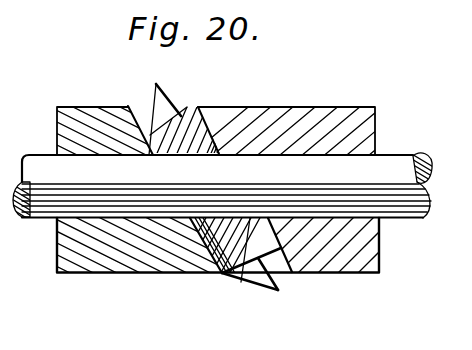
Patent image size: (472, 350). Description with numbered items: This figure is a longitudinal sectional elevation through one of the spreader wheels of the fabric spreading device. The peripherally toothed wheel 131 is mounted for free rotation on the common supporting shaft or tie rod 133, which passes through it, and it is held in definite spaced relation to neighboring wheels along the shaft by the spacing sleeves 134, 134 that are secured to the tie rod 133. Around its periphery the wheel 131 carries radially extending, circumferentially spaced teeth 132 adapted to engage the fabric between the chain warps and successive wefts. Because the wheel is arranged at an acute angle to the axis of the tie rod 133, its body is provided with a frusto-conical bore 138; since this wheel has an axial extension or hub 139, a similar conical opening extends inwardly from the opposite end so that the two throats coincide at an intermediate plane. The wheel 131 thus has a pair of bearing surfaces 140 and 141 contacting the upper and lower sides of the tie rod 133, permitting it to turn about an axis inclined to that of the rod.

The peripherally toothed wheel 131 is at (236, 243).
The teeth 132 is at (280, 292).
The tie rod 133 is at (401, 219).
The spacing sleeve 134 is at (354, 112).
The frusto-conical bore 138 is at (207, 240).
The hub 139 is at (166, 153).
The bearing surface 140 is at (170, 140).
The bearing surface 141 is at (241, 282).